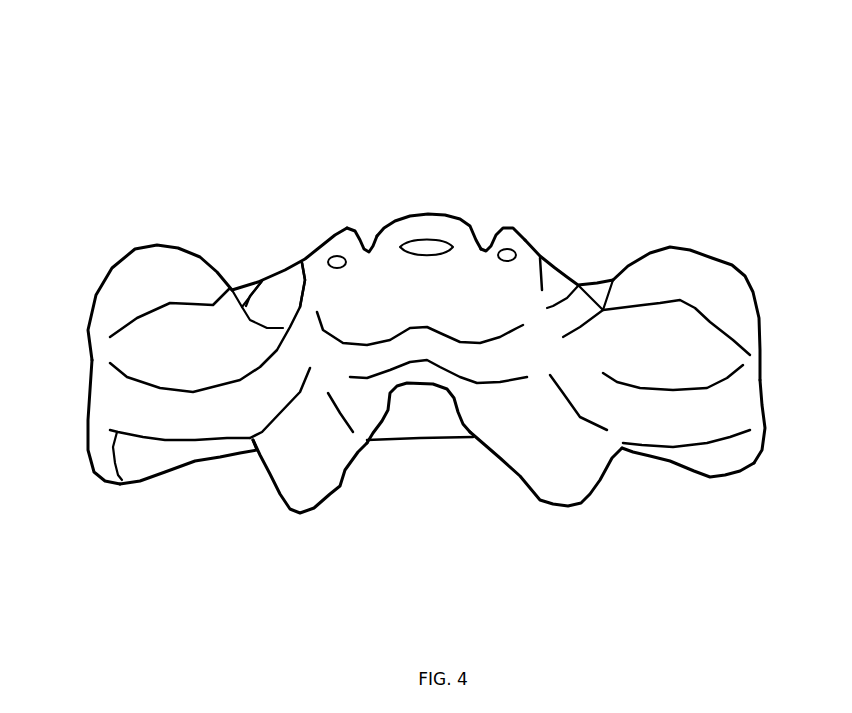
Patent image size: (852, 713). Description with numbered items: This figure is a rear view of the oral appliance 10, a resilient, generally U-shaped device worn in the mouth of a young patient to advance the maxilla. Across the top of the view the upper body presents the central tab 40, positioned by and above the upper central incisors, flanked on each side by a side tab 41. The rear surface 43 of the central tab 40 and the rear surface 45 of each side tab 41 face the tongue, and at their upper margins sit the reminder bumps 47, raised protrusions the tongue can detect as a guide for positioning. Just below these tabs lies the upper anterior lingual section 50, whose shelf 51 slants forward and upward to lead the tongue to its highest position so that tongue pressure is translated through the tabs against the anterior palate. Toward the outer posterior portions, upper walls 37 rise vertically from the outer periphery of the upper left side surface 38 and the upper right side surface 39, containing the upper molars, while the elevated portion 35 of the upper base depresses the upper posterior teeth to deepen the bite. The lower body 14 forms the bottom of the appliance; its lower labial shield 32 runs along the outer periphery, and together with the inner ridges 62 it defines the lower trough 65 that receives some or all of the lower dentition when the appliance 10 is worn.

The appliance 10 is at (672, 100).
The lower body 14 is at (90, 455).
The lower labial shield 32 is at (145, 460).
The elevated portion 35 is at (170, 370).
The upper walls 37 is at (112, 272).
The upper left side surface 38 is at (233, 293).
The upper right side surface 39 is at (610, 300).
The central tab 40 is at (433, 213).
The side tabs 41 is at (347, 225).
The rear surface 43 is at (405, 223).
The rear surface 45 is at (345, 240).
The reminder bumps 47 is at (333, 258).
The upper anterior lingual section 50 is at (386, 292).
The shelf 51 is at (473, 355).
The inner ridges 62 is at (283, 503).
The lower trough 65 is at (207, 448).